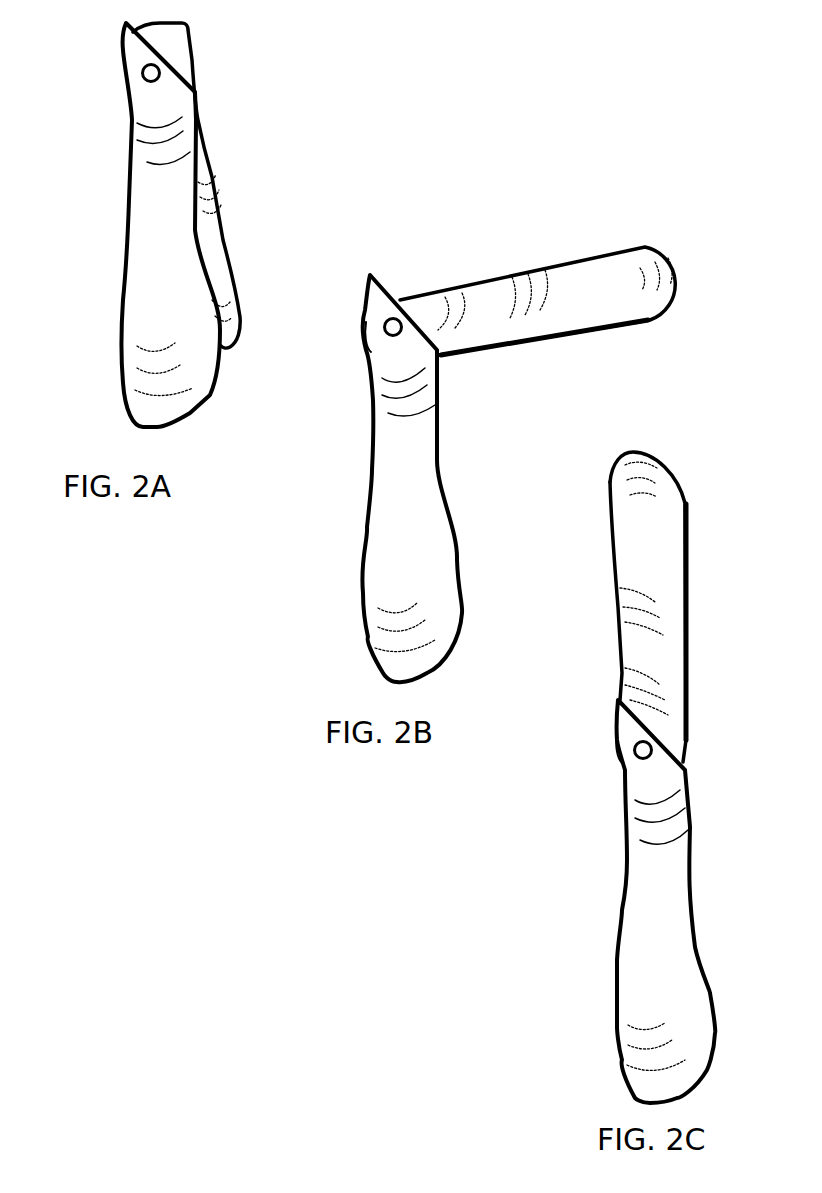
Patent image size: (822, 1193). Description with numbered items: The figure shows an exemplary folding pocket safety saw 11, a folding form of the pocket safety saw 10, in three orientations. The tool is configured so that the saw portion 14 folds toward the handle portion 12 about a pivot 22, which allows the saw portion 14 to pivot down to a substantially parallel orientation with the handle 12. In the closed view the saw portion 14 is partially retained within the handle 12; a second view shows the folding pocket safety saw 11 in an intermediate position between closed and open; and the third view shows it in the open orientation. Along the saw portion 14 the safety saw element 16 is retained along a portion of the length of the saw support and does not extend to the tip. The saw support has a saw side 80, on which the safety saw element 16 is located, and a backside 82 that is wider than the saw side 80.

In FIG. 2A, the pocket safety saw 10 is at (205, 68).
In FIG. 2B, the pocket safety saw 10 is at (357, 593).
In FIG. 2C, the pocket safety saw 10 is at (615, 948).
In FIG. 2A, the folding pocket safety saw 11 is at (198, 120).
In FIG. 2B, the folding pocket safety saw 11 is at (387, 417).
In FIG. 2C, the folding pocket safety saw 11 is at (638, 788).
In FIG. 2A, the handle portion 12 is at (147, 308).
In FIG. 2B, the handle portion 12 is at (378, 485).
In FIG. 2C, the handle portion 12 is at (638, 890).
In FIG. 2A, the saw portion 14 is at (195, 200).
In FIG. 2B, the saw portion 14 is at (578, 288).
In FIG. 2C, the saw portion 14 is at (657, 493).
In FIG. 2B, the safety saw element 16 is at (527, 343).
In FIG. 2C, the safety saw element 16 is at (688, 592).
In FIG. 2A, the pivot 22 is at (145, 71).
In FIG. 2B, the pivot 22 is at (387, 322).
In FIG. 2C, the pivot 22 is at (635, 745).
In FIG. 2B, the saw side 80 is at (602, 327).
In FIG. 2A, the backside 82 is at (222, 263).
In FIG. 2B, the backside 82 is at (483, 292).